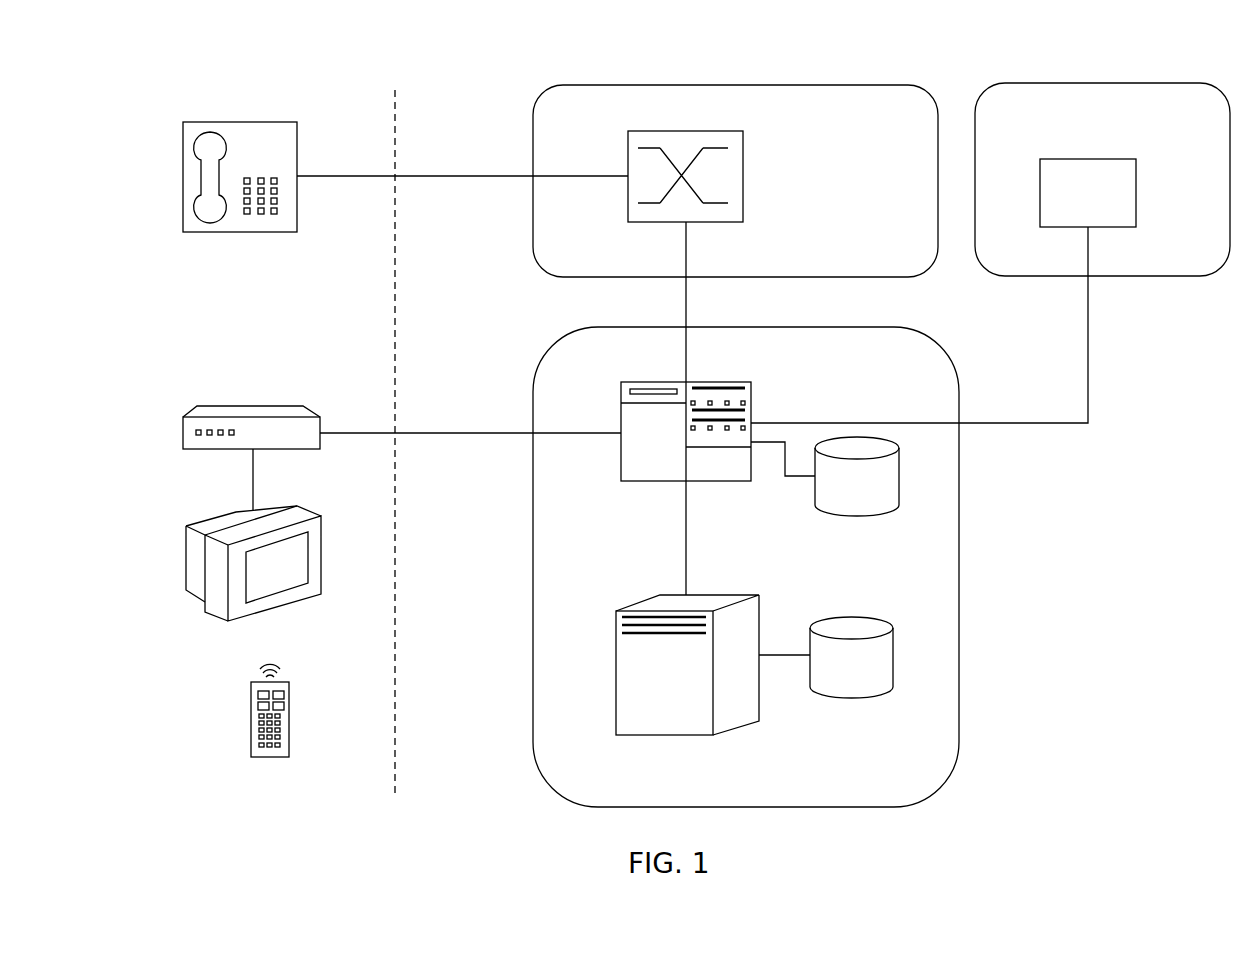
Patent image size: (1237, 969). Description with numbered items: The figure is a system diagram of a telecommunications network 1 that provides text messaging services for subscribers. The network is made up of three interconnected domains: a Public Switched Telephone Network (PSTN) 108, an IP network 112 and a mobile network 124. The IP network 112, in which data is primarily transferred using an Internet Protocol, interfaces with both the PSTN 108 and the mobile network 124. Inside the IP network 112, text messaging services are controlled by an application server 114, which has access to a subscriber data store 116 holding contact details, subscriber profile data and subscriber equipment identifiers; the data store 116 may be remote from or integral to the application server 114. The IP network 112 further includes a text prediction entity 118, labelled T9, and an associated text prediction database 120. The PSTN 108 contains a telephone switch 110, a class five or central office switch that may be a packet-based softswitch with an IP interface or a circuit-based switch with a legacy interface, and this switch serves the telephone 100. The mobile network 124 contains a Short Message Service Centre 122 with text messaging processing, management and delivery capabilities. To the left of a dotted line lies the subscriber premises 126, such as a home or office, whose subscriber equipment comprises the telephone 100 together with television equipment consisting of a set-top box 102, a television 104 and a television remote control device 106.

The telecommunications network 1 is at (371, 37).
The telephone 100 is at (183, 131).
The set-top box 102 is at (215, 406).
The television 104 is at (190, 537).
The television remote control device 106 is at (253, 740).
The Public Switched Telephone Network (PSTN) 108 is at (555, 270).
The telephone switch 110 is at (738, 143).
The IP network 112 is at (580, 797).
The application server 114 is at (703, 480).
The subscriber data store 116 is at (862, 508).
The text prediction entity 118 is at (686, 735).
The text prediction database 120 is at (848, 685).
The Short Message Service Centre (SMSC) 122 is at (1133, 220).
The mobile network 124 is at (1166, 92).
The subscriber premises 126 is at (218, 799).